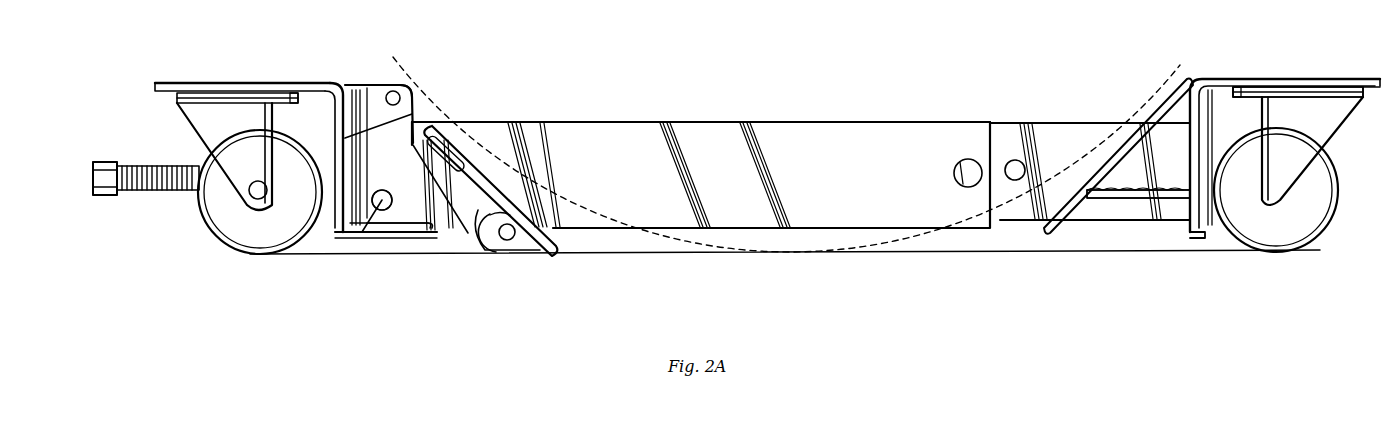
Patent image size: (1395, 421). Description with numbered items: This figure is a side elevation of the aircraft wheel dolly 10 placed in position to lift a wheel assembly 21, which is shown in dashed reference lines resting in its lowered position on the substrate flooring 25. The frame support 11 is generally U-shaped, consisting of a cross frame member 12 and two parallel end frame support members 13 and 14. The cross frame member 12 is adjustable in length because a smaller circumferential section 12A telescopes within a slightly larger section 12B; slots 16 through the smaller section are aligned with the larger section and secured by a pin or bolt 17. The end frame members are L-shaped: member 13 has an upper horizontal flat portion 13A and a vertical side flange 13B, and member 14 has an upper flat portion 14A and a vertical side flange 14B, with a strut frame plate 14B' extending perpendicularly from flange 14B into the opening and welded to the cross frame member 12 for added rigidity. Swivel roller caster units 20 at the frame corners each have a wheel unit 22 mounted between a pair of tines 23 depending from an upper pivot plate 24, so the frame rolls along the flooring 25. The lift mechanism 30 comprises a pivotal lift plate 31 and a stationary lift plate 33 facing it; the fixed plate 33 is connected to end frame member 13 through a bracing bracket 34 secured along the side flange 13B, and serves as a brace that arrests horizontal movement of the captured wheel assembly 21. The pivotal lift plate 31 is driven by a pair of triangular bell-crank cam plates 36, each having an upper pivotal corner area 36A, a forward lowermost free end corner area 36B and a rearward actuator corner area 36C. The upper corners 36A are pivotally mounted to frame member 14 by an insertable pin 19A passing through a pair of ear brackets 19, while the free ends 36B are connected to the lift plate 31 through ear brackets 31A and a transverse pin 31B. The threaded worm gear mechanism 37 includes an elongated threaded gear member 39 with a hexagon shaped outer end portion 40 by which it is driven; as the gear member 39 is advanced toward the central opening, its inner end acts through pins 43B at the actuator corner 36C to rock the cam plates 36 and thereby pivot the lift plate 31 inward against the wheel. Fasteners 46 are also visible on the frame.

The wheel dolly assembly unit 10 is at (701, 162).
The frame support 11 is at (645, 126).
The cross frame member 12 is at (787, 126).
The smaller circumferential section 12A is at (1075, 126).
The larger circumferential section 12B is at (897, 126).
The end frame support member 13 is at (1255, 82).
The upper horizontally flat-like portion 13A is at (1348, 86).
The side flange portion 13B is at (1190, 240).
The end frame support member 14 is at (320, 90).
The upper horizontally flat-like portion 14A is at (205, 84).
The side flange portion 14B is at (362, 282).
The strut frame plate 14B' is at (390, 280).
The slots 16 is at (1012, 161).
The pin or bolt 17 is at (960, 182).
The ear brackets 19 is at (350, 85).
The insertable pin 19A is at (390, 92).
The roller caster units 20 is at (265, 268).
The wheel assembly 21 is at (735, 235).
The wheel unit 22 is at (226, 242).
The tines 23 is at (198, 122).
The upper pivot plate 24 is at (190, 103).
The substrate flooring 25 is at (625, 252).
The lift mechanism 30 is at (576, 176).
The lift plate 31 is at (462, 146).
The ear brackets 31A is at (508, 240).
The pin 31B is at (502, 244).
The lift plate 33 is at (1153, 110).
The bracing bracket 34 is at (1130, 202).
The cam plate members 36 is at (418, 218).
The upper pivotal corner area 36A is at (413, 105).
The lowermost free end corner area 36B is at (485, 230).
The actuator corner area 36C is at (372, 212).
The threaded worm gear mechanism 37 is at (147, 208).
The worm gear member 39 is at (178, 168).
The hexagon shaped outer end portion 40 is at (110, 160).
The pins 43B is at (390, 214).
The fastener 46 is at (293, 95).